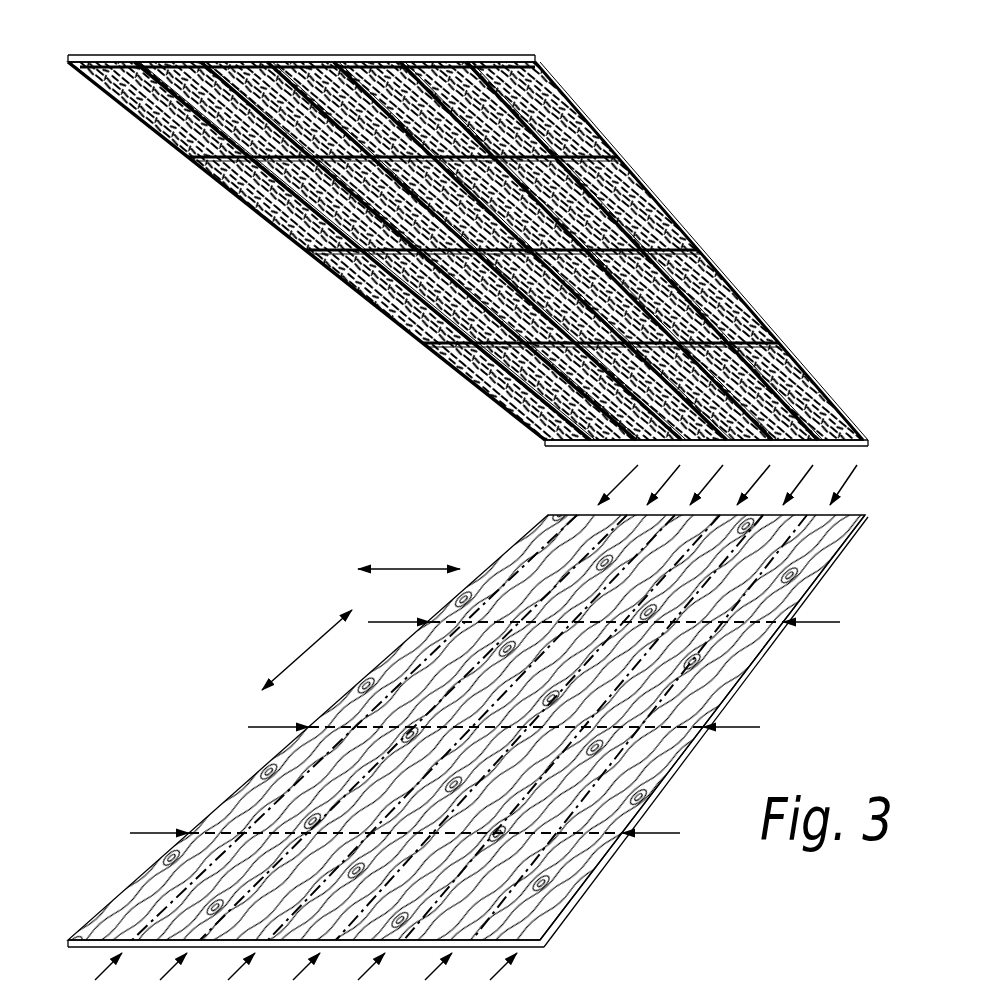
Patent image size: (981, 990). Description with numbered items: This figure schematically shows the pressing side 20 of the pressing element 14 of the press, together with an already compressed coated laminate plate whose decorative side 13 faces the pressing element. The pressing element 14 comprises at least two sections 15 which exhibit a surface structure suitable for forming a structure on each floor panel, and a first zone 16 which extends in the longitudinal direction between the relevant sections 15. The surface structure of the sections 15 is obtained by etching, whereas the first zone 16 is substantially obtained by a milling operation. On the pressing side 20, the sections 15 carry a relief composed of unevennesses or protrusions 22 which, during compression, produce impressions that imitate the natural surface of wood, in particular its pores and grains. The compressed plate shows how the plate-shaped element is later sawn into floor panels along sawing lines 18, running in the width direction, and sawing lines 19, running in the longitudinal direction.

The decorative side 13 is at (466, 719).
The pressing element 14 is at (815, 390).
The sections 15 is at (545, 72).
The first zone 16 is at (157, 82).
The sawing lines 18 is at (790, 610).
The sawing lines 19 is at (578, 530).
The pressing sides 20 is at (465, 225).
The unevennesses or protrusions 22 is at (688, 238).